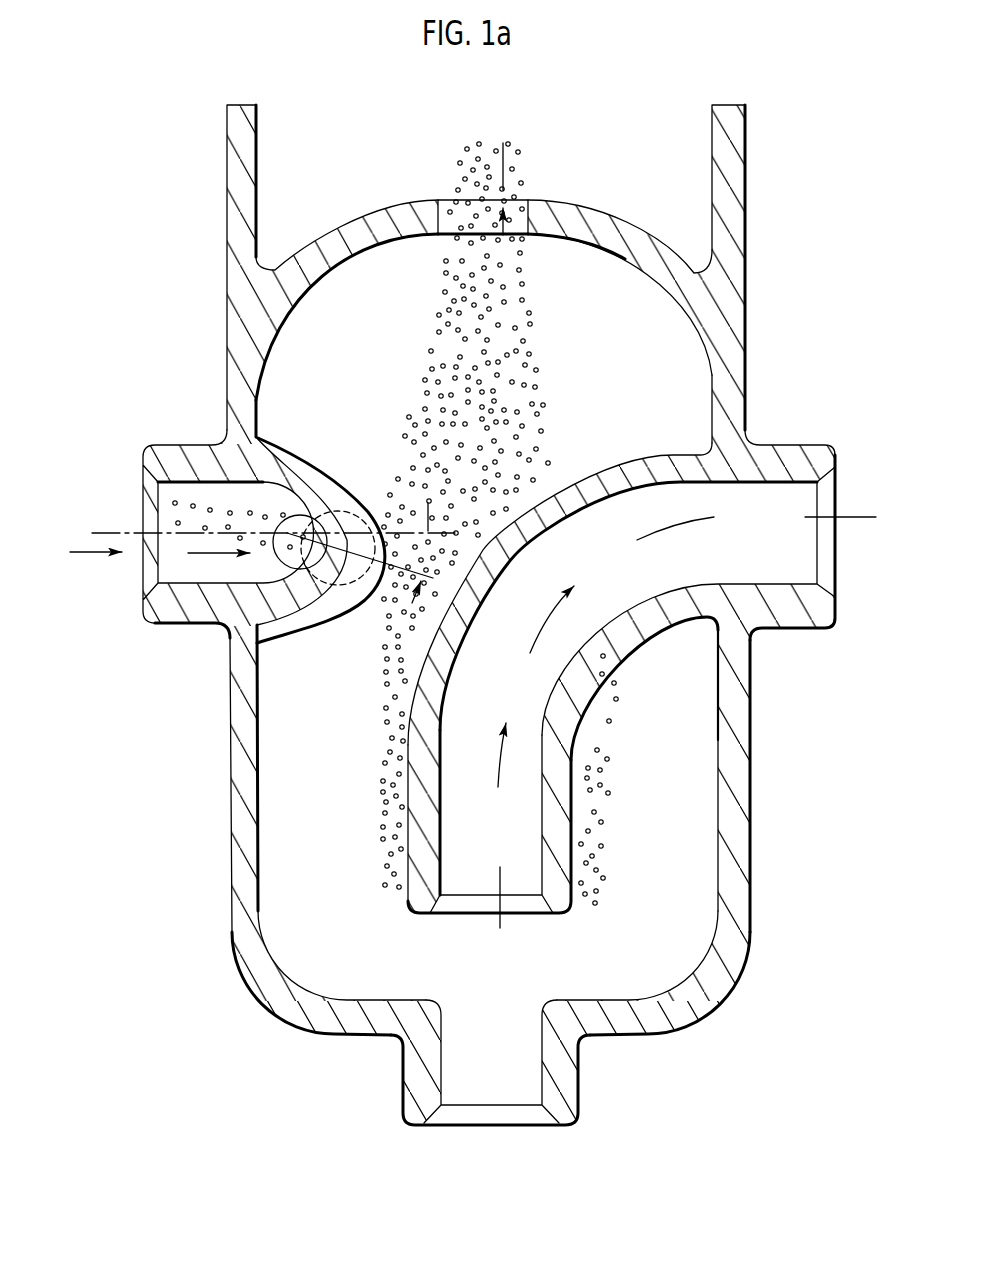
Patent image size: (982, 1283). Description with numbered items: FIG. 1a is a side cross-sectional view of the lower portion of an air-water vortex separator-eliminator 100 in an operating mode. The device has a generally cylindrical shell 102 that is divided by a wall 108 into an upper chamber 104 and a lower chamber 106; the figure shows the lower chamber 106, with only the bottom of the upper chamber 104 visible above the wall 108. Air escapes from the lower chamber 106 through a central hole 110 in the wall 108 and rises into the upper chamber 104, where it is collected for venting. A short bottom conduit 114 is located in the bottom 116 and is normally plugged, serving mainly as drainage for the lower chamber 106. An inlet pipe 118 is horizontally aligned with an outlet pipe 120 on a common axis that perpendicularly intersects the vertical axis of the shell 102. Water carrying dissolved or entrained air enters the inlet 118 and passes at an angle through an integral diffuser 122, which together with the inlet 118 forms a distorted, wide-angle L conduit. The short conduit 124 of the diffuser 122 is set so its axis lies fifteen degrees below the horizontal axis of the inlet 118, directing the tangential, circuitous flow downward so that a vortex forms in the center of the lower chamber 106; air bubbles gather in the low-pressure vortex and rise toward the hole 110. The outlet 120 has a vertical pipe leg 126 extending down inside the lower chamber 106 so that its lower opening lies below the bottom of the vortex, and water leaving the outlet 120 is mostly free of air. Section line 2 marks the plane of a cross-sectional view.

The air-water vortex separator-eliminator 100 is at (218, 947).
The cylindrical shell 102 is at (227, 231).
The upper chamber 104 is at (681, 189).
The lower chamber 106 is at (681, 788).
The wall 108 is at (353, 222).
The central hole 110 is at (452, 222).
The bottom conduit 114 is at (576, 1108).
The bottom 116 is at (357, 1030).
The inlet pipe 118 is at (148, 460).
The outlet pipe 120 is at (823, 462).
The integral diffuser 122 is at (347, 614).
The short conduit 124 is at (298, 543).
The vertical pipe leg 126 is at (568, 908).
The section line 2- 2 is at (205, 395).